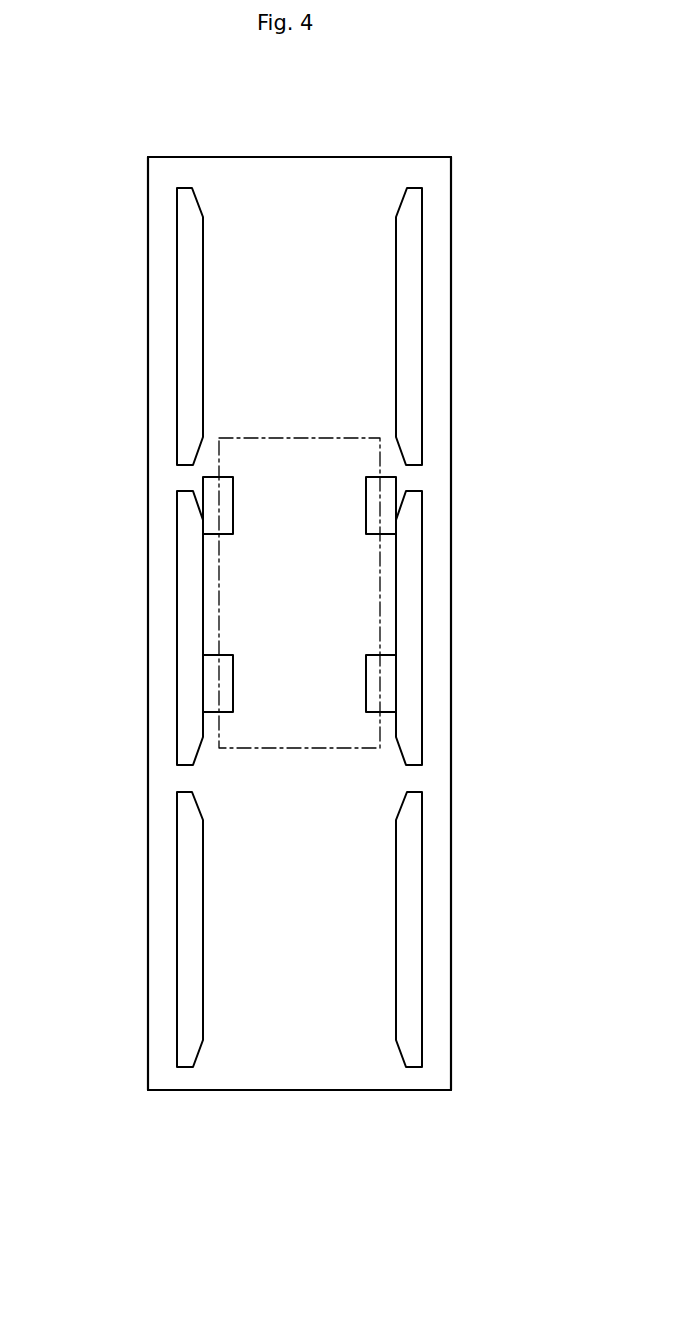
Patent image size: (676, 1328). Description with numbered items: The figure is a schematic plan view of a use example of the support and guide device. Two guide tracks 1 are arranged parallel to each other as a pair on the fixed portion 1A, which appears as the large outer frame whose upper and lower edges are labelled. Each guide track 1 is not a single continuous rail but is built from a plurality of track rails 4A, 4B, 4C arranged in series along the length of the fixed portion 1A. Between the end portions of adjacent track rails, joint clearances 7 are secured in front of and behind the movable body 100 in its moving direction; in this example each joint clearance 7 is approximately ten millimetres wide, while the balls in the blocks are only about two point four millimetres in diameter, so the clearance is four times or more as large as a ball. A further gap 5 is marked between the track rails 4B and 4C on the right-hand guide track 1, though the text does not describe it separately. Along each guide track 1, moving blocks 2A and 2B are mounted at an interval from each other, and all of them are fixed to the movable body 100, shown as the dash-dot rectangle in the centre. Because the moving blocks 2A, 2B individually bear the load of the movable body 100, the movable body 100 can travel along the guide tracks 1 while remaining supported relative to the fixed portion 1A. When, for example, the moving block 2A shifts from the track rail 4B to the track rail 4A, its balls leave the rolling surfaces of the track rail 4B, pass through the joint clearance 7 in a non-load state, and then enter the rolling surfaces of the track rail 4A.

The guide track 1 is at (170, 300).
The fixed portion 1A is at (310, 190).
The track rail 4A is at (187, 425).
The track rail 4B is at (187, 543).
The track rail 4C is at (197, 935).
The moving block 2A is at (220, 510).
The moving block 2B is at (210, 690).
The joint clearance 7 is at (410, 481).
The gap between conductor patterns 5 is at (395, 752).
The movable body 100 is at (303, 436).